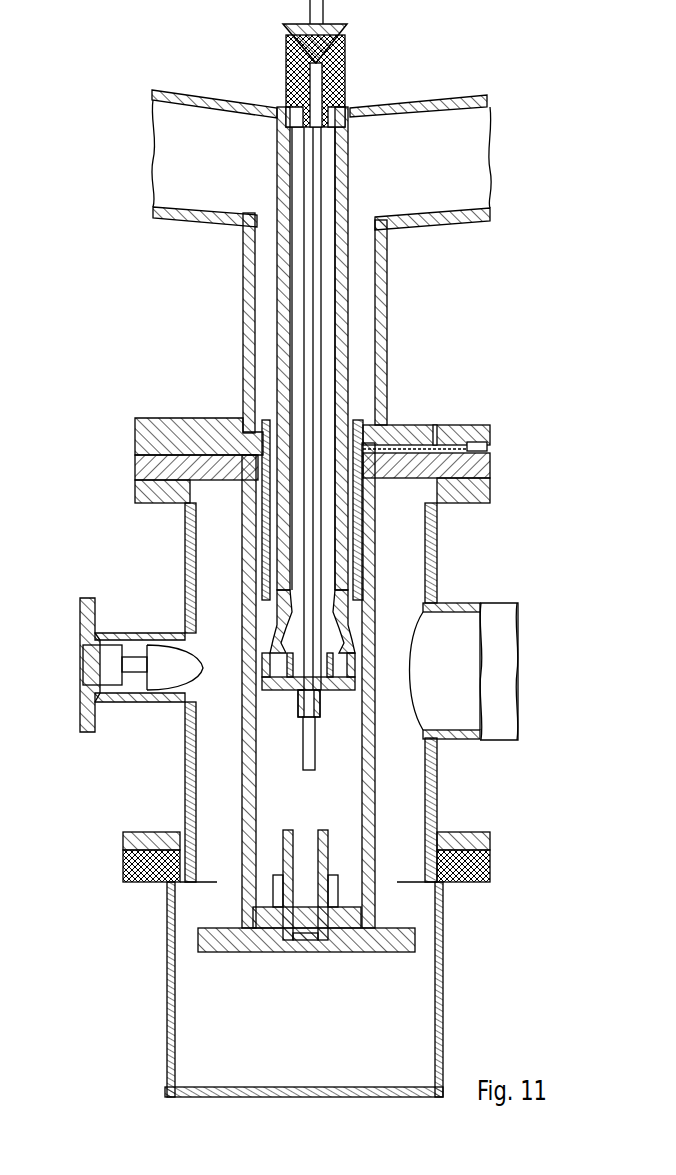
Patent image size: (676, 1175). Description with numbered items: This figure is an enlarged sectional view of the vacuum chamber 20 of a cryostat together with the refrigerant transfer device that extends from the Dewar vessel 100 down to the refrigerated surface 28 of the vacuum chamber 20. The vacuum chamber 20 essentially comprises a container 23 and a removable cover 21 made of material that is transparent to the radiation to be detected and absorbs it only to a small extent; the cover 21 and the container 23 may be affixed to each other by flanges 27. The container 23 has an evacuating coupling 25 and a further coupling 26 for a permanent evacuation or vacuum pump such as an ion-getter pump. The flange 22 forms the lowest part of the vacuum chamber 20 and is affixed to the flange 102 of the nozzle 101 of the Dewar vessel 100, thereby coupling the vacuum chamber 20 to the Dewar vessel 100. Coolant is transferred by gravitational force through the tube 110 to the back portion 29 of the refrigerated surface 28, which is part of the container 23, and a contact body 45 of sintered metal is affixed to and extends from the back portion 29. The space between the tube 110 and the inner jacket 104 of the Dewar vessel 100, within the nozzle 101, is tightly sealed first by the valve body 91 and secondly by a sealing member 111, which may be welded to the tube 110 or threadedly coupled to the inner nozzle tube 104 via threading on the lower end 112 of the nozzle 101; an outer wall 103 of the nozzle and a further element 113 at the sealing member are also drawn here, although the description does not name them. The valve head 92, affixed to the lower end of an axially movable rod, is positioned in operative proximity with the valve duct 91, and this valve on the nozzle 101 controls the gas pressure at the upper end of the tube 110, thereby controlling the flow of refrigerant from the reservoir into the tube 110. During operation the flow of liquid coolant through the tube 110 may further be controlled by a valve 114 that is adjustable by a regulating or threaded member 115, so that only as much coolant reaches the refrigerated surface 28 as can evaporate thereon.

The valve head 92 is at (345, 27).
The valve duct 91 is at (345, 60).
The inner jacket 104 is at (188, 95).
The outer tube 103 is at (380, 568).
The Dewar vessel 100 is at (460, 222).
The tube 110 is at (318, 302).
The nozzle 101 is at (368, 327).
The valve 114 is at (435, 445).
The flange 102 is at (490, 435).
The threaded member 115 is at (490, 450).
The flange 22 is at (490, 497).
The container 23 is at (184, 762).
The evacuating coupling 25 is at (80, 700).
The coupling 26 is at (470, 603).
The sealing member 111 is at (308, 685).
The lower end 112 is at (268, 670).
The right lip 113 is at (357, 670).
The flanges 27 is at (123, 852).
The contact body 45 is at (328, 852).
The back portion 29 is at (277, 877).
The refrigerated surface 28 is at (198, 938).
The vacuum chamber 20 is at (425, 990).
The cover 21 is at (167, 1038).